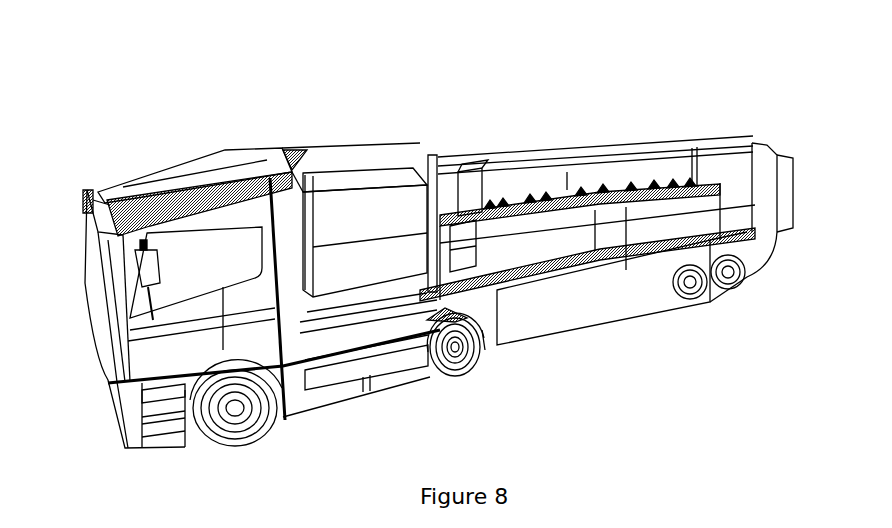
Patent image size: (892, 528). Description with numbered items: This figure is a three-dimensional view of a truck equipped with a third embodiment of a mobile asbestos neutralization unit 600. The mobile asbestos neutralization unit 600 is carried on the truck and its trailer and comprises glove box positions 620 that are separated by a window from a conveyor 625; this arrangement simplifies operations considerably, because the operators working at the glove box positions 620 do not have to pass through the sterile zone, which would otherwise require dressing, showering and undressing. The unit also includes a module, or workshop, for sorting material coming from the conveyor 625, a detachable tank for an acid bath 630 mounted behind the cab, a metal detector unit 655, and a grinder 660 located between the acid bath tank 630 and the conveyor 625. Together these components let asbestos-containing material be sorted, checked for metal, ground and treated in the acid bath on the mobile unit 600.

The mobile asbestos neutralization unit 600 is at (375, 108).
The glove box positions 620 is at (643, 183).
The conveyor 625 is at (568, 208).
The detachable tank for acid bath 630 is at (345, 267).
The metal detector unit 655 is at (483, 186).
The grinder 660 is at (438, 208).